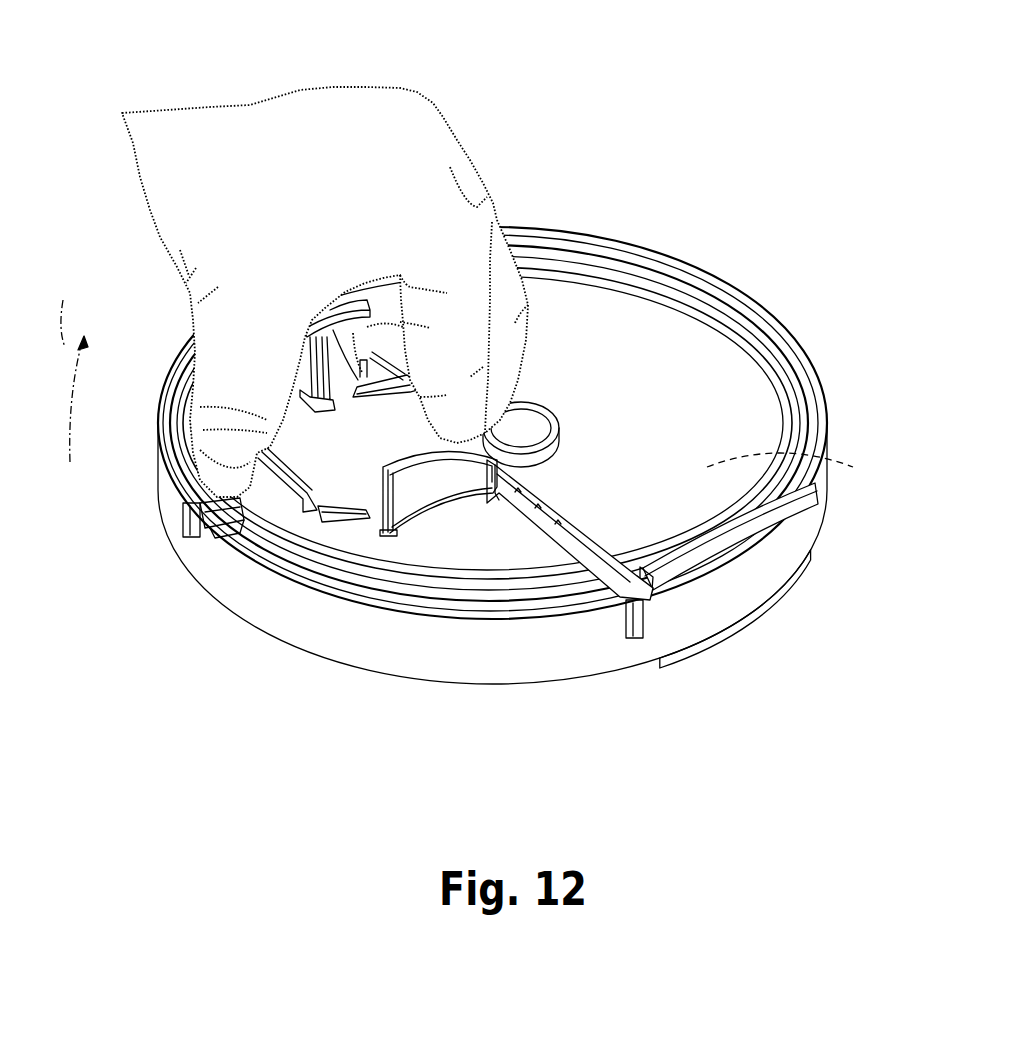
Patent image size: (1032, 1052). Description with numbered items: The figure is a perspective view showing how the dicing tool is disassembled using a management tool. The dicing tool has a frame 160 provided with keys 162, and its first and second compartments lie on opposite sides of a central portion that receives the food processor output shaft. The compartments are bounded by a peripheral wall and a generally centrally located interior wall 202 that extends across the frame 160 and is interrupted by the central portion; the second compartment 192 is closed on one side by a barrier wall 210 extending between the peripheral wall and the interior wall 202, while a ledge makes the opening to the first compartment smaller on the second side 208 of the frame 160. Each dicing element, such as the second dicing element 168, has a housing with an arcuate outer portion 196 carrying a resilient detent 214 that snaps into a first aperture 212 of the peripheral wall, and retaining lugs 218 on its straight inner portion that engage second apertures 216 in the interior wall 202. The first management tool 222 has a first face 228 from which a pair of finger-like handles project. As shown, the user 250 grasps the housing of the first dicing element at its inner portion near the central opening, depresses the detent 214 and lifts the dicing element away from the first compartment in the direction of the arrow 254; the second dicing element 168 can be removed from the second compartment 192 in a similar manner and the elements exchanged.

The frame 160 is at (156, 458).
The keys 162 is at (183, 520).
The second dicing element 168 is at (703, 653).
The second compartment 192 is at (809, 469).
The outer portion 196 is at (317, 557).
The interior wall 202 is at (583, 530).
The second side 208 is at (623, 673).
The barrier wall 210 is at (670, 343).
The first aperture 212 is at (203, 527).
The resilient detent 214 is at (230, 517).
The second apertures 216 is at (590, 530).
The retaining lugs 218 is at (590, 540).
The first management tool 222 is at (507, 553).
The first face 228 is at (437, 547).
The user 250 is at (447, 104).
The arrow 254 is at (65, 366).